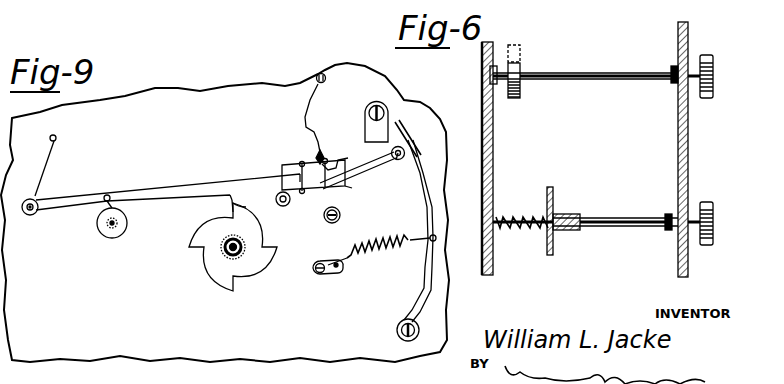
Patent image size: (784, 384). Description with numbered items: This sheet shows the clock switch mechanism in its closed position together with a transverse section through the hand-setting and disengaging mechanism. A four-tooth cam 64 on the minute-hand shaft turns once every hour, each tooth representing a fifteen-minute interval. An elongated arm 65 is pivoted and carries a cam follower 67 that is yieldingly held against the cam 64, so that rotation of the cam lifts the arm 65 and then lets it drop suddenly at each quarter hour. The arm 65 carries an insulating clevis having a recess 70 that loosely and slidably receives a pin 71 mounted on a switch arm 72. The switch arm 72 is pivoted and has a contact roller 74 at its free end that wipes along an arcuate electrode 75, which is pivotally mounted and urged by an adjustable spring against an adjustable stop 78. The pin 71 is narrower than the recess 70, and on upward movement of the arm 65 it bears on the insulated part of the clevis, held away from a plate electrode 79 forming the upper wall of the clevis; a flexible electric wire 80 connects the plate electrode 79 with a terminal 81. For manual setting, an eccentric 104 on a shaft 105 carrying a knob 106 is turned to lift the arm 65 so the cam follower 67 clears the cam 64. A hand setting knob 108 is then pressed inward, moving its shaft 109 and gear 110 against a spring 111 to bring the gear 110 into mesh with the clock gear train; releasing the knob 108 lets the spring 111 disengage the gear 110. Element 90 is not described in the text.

In FIG. 9, the four-tooth cam 64 is at (217, 268).
In FIG. 9, the elongated arm 65 is at (200, 187).
In FIG. 6, the elongated arm 65 is at (522, 51).
In FIG. 9, the cam follower 67 is at (242, 207).
In FIG. 9, the recess 70 is at (352, 188).
In FIG. 9, the pin 71 is at (324, 196).
In FIG. 9, the switch arm 72 is at (380, 170).
In FIG. 9, the contact roller 74 is at (404, 162).
In FIG. 9, the arcuate electrode 75 is at (407, 152).
In FIG. 9, the adjustable stop 78 is at (366, 116).
In FIG. 9, the plate electrode 79 is at (362, 163).
In FIG. 9, the flexible electric wire 80 is at (310, 104).
In FIG. 9, the terminal 81 is at (316, 73).
In FIG. 9, the screw 90 is at (333, 223).
In FIG. 9, the eccentric 104 is at (117, 236).
In FIG. 6, the eccentric 104 is at (521, 95).
In FIG. 9, the shaft 105 is at (120, 220).
In FIG. 6, the shaft 105 is at (600, 72).
In FIG. 6, the knob 106 is at (707, 55).
In FIG. 6, the hand setting knob 108 is at (708, 202).
In FIG. 6, the shaft 109 is at (600, 220).
In FIG. 6, the gear 110 is at (553, 213).
In FIG. 6, the spring 111 is at (507, 217).